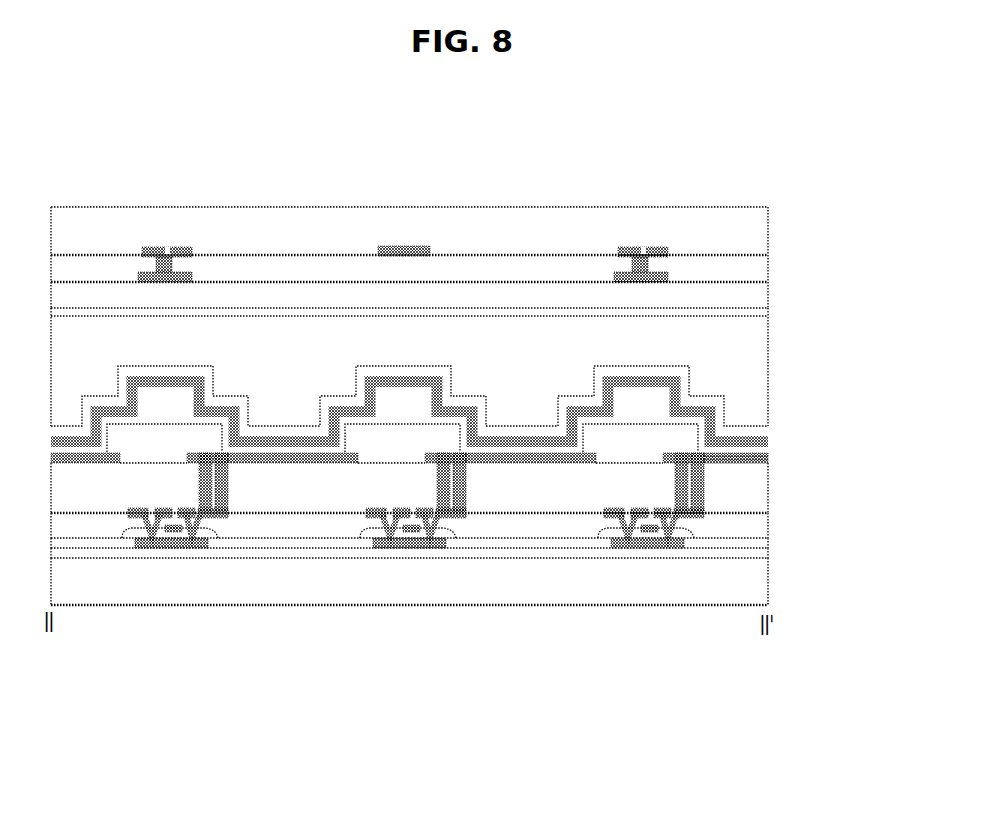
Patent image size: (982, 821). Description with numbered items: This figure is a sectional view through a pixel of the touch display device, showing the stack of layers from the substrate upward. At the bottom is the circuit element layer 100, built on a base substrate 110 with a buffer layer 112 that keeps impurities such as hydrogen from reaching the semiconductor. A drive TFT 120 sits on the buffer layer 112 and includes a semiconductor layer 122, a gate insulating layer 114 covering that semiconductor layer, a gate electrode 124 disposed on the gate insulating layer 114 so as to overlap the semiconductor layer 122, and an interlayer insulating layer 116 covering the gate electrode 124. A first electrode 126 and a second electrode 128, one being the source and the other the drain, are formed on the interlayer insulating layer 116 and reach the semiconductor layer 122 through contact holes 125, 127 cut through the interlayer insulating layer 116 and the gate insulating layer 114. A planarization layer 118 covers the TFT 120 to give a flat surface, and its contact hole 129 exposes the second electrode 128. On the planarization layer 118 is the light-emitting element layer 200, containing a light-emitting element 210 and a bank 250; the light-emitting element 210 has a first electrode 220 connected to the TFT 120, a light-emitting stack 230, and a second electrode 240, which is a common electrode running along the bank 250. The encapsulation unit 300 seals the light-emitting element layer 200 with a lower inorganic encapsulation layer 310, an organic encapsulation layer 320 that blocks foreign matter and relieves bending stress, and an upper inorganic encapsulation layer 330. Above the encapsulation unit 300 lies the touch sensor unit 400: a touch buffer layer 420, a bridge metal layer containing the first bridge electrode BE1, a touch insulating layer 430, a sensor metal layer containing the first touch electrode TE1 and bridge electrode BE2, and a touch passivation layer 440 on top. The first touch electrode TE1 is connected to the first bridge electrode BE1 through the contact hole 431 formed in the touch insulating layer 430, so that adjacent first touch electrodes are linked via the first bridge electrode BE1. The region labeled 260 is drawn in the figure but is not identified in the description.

The circuit element layer 100 is at (465, 562).
The base substrate 110 is at (435, 586).
The buffer layer 112 is at (767, 553).
The gate insulating layer 114 is at (762, 543).
The interlayer insulating layer 116 is at (762, 527).
The planarization layer 118 is at (762, 502).
The TFT 120 is at (413, 612).
The semiconductor layer 122 is at (374, 527).
The gate electrode 124 is at (412, 541).
The contact hole 125 is at (368, 521).
The first electrode 126 is at (372, 548).
The contact hole 127 is at (447, 521).
The second electrode 128 is at (445, 523).
The contact hole 129 is at (298, 671).
The light-emitting element layer 200 is at (409, 582).
The light-emitting element 210 is at (409, 592).
The first electrode 220 is at (723, 463).
The light-emitting stack 230 is at (740, 463).
The second electrode 240 is at (753, 463).
The bank 250 is at (625, 448).
The opposite electrode 260 is at (622, 412).
The encapsulation unit 300 is at (465, 367).
The inorganic encapsulation layer 310 is at (435, 396).
The organic encapsulation layer 320 is at (763, 366).
The inorganic encapsulation layer 330 is at (767, 313).
The touch sensor unit 400 is at (465, 215).
The touch buffer layer 420 is at (435, 289).
The first bridge electrode BE1 is at (667, 280).
The touch insulating layer 430 is at (767, 257).
The first touch electrode TE1 is at (667, 247).
The contact hole 431 is at (182, 257).
The bridge electrode BE2 is at (404, 245).
The touch passivation layer 440 is at (755, 213).